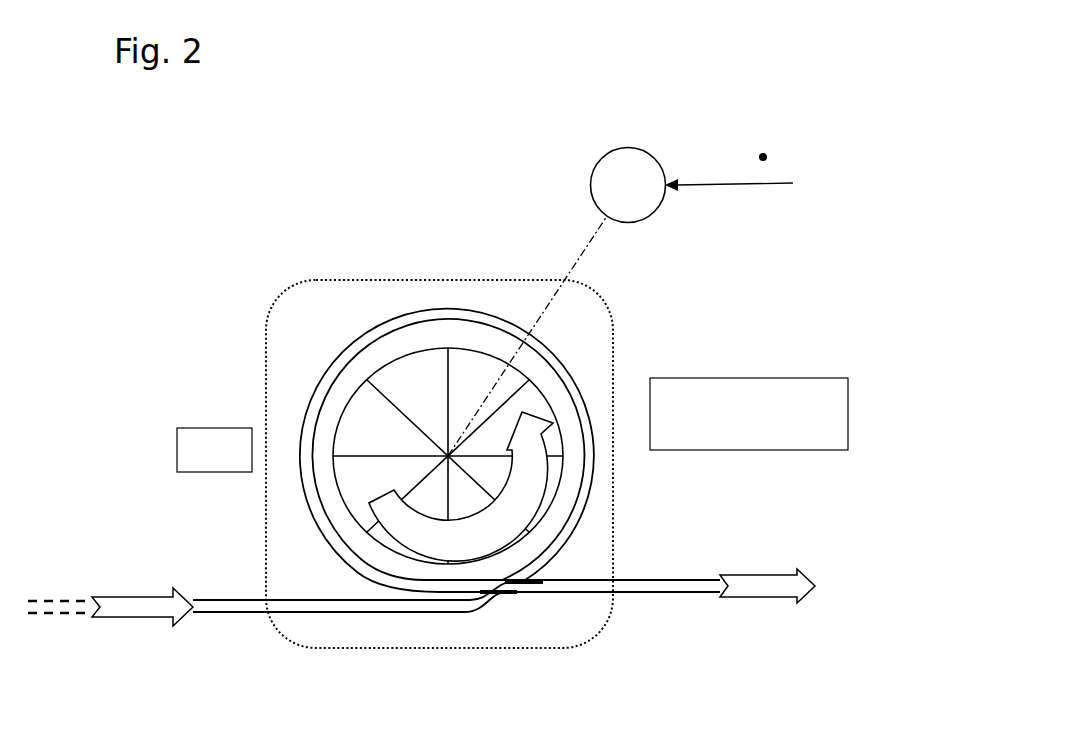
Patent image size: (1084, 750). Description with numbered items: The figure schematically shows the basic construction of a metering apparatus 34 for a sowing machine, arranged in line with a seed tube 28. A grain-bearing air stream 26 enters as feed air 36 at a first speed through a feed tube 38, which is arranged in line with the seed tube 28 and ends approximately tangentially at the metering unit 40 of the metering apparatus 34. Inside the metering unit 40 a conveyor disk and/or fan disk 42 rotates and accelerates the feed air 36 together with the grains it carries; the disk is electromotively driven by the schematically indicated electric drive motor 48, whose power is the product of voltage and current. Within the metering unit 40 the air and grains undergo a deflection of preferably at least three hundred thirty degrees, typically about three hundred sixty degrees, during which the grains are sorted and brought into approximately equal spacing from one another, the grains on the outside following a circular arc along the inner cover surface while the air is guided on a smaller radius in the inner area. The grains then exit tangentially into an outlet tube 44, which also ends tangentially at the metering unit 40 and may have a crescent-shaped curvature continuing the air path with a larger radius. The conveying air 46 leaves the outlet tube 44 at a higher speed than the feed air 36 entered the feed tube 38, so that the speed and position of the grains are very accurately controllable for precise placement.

The grain-bearing air stream 26 is at (142, 598).
The seed tube 28 is at (52, 615).
The metering apparatus 34 is at (316, 272).
The feed air 36 is at (354, 596).
The feed tube 38 is at (240, 556).
The metering unit 40 is at (443, 272).
The conveyor disk and/or fan disk 42 is at (465, 363).
The outlet tube 44 is at (700, 522).
The conveying air 46 is at (767, 577).
The electric drive motor 48 is at (643, 196).